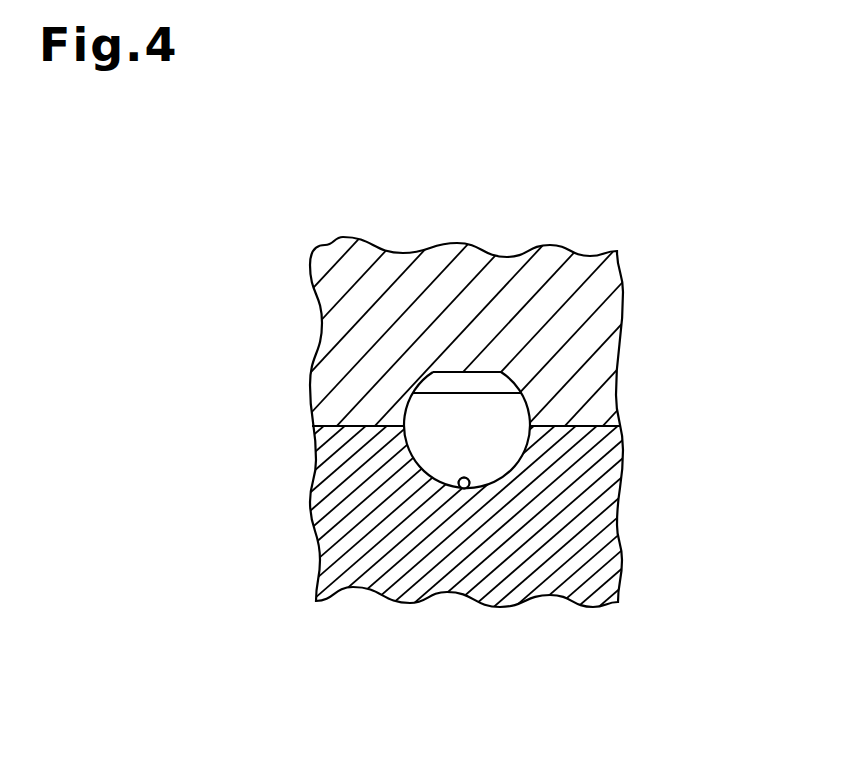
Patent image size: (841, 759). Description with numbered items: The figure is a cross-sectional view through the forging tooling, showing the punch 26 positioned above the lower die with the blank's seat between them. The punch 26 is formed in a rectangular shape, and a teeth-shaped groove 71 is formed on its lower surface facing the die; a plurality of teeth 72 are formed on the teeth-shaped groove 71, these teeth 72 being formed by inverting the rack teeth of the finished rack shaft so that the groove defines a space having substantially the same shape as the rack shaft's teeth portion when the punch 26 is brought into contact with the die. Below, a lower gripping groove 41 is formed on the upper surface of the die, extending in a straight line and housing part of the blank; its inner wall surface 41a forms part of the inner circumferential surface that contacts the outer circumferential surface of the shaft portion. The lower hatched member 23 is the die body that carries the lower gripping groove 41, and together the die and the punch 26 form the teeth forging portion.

The punch 26 is at (343, 330).
The lower member (cross-hatched body) 23 is at (338, 481).
The teeth-shaped groove 71 is at (521, 408).
The teeth 72 is at (466, 379).
The lower gripping groove 41 is at (463, 489).
The inner wall surface of the lower gripping groove 41a is at (461, 529).